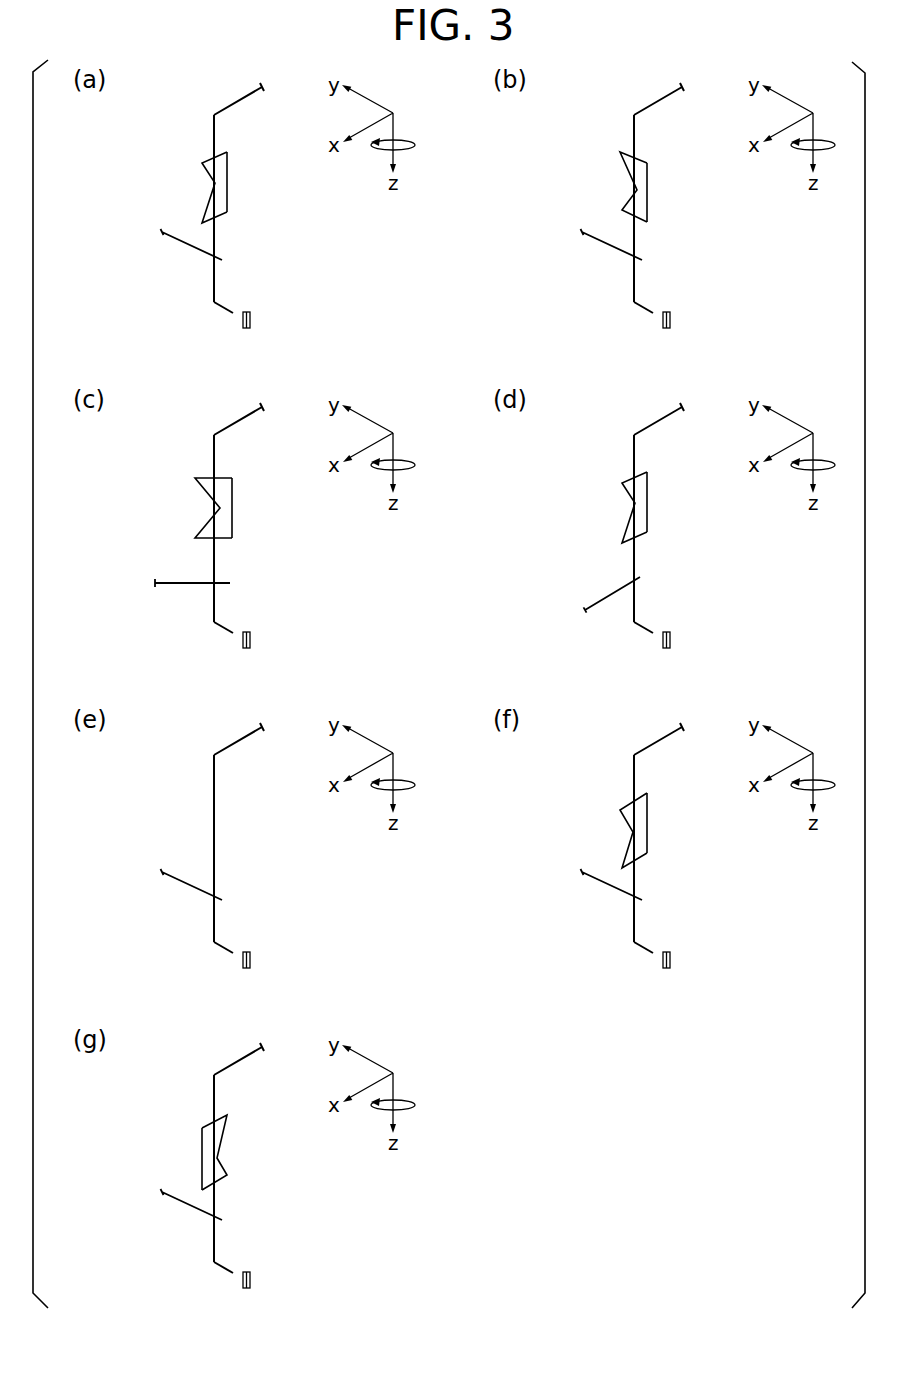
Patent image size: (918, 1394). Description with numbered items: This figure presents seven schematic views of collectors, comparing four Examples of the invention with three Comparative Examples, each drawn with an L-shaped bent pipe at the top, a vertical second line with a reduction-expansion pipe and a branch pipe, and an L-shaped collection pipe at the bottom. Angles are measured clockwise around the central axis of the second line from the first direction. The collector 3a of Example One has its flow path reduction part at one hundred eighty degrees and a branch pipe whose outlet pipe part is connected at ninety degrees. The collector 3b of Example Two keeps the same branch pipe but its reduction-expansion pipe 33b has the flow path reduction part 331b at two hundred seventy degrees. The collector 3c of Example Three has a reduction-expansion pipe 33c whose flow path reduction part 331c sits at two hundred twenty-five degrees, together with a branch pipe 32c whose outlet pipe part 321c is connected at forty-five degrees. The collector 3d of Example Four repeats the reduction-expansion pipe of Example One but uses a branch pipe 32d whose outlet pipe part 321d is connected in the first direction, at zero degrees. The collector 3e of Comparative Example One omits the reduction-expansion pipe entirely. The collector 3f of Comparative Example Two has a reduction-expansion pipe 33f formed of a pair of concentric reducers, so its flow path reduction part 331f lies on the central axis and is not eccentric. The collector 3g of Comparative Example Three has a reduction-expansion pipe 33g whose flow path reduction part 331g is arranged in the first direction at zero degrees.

The collector of Example 1 3a is at (134, 172).
The collector of Example 2 3b is at (614, 209).
The collector of Example 3 3c is at (196, 529).
The collector of Example 4 3d is at (615, 529).
The collector of Comparative Example 1 3e is at (188, 849).
The collector of Comparative Example 2 3f is at (613, 849).
The collector of Comparative Example 3 3g is at (192, 1169).
The branch pipe 32c is at (206, 569).
The branch pipe 32d is at (627, 587).
The outlet pipe part 321c is at (166, 562).
The outlet pipe part 321d is at (582, 587).
The reduction-expansion pipe 33b is at (681, 194).
The reduction-expansion pipe 33c is at (260, 514).
The reduction-expansion pipe 33f is at (679, 832).
The reduction-expansion pipe 33g is at (259, 1156).
The flow path reduction part 331b is at (684, 192).
The flow path reduction part 331c is at (264, 508).
The flow path reduction part 331f is at (680, 823).
The flow path reduction part 331g is at (247, 1158).